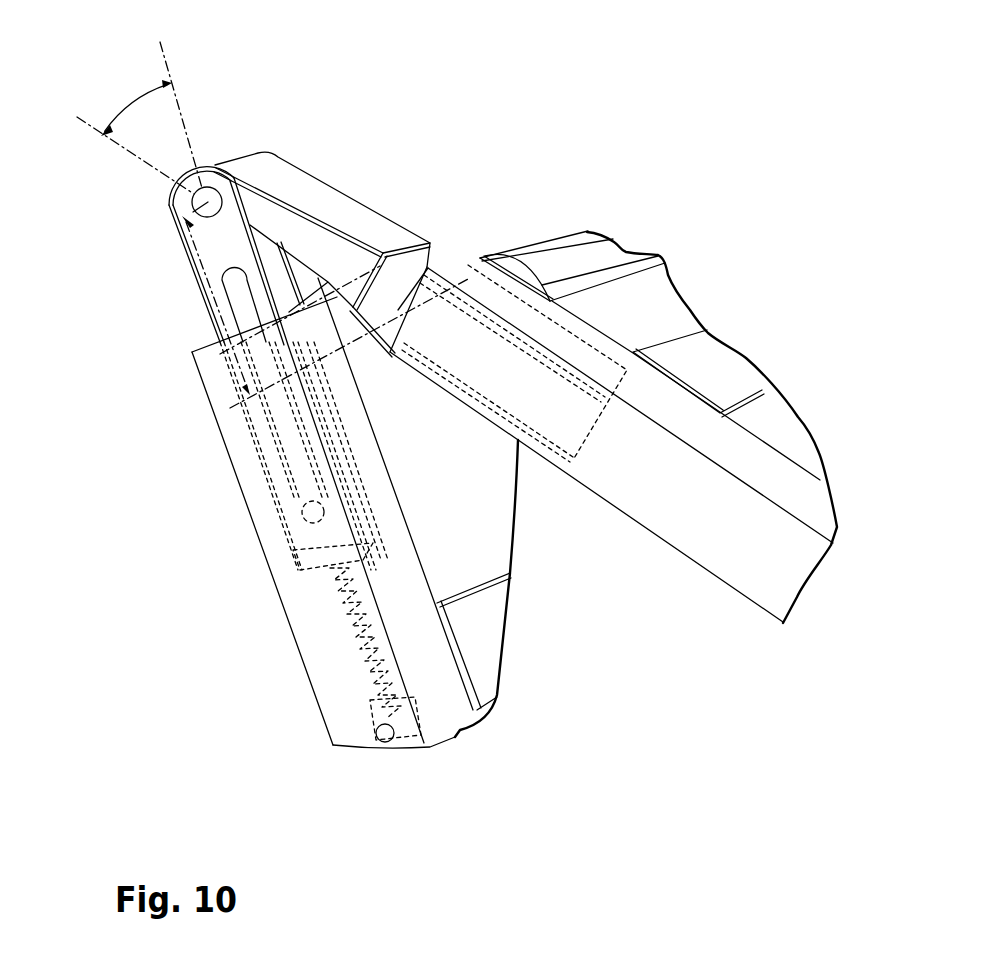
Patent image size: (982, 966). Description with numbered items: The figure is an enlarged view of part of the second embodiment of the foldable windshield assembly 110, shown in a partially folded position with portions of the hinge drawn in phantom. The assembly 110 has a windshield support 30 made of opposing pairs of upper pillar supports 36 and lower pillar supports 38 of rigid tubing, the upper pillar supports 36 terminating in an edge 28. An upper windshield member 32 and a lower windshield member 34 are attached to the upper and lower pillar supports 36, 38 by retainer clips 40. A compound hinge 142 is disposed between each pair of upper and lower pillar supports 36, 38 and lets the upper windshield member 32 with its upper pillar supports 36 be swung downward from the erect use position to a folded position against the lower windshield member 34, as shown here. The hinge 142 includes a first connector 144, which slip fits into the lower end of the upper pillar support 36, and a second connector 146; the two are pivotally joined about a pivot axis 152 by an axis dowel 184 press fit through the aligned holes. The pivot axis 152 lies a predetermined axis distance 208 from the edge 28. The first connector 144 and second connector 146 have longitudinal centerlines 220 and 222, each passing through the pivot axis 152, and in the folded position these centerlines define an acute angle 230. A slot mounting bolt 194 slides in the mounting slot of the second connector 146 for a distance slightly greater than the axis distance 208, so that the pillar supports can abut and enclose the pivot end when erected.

The foldable windshield assembly 110 is at (338, 88).
The hinge 142 is at (303, 164).
The second connector 146 is at (250, 403).
The axis dowel 184 is at (195, 200).
The first connector centerline 220 is at (93, 124).
The second connector centerline 222 is at (173, 86).
The acute angle 230 is at (130, 99).
The pivot axis 152 is at (183, 219).
The axis distance 208 is at (210, 286).
The edge 28 is at (438, 260).
The upper windshield member 32 is at (653, 317).
The upper pillar supports 36 is at (753, 565).
The first connector 144 is at (589, 436).
The retainer clips 40 is at (483, 643).
The lower windshield member 34 is at (460, 548).
The windshield support 30 is at (229, 466).
The lower pillar supports 38 is at (258, 518).
The slot mounting bolt 194 is at (300, 568).